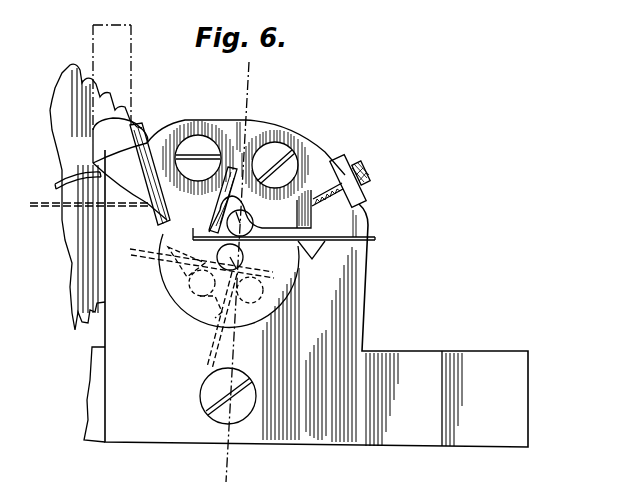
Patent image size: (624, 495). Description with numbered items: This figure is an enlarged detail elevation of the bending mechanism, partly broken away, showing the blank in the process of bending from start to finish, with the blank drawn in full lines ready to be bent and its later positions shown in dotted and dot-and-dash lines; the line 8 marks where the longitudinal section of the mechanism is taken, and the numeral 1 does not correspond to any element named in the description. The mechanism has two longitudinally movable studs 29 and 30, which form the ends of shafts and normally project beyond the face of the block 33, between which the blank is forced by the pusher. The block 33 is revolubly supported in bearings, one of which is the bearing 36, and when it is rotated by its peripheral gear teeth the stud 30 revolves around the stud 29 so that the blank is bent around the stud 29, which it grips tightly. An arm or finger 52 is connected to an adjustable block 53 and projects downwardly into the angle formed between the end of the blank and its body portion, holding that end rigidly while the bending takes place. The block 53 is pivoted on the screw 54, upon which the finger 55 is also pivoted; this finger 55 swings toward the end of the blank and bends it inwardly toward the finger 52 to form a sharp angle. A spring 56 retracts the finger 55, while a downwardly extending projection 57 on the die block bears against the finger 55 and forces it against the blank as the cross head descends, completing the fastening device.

The operating lever 1 is at (70, 90).
The section line 8— 8 is at (285, 105).
The stud 29 is at (240, 260).
The stud 30 is at (240, 209).
The block 33 is at (182, 287).
The bearing 36 is at (196, 394).
The arm or finger 52 is at (219, 175).
The adjustable block 53 is at (292, 130).
The screw 54 is at (198, 158).
The finger 55 is at (194, 201).
The spring 56 is at (58, 184).
The downwardly extending projection 57 is at (108, 62).